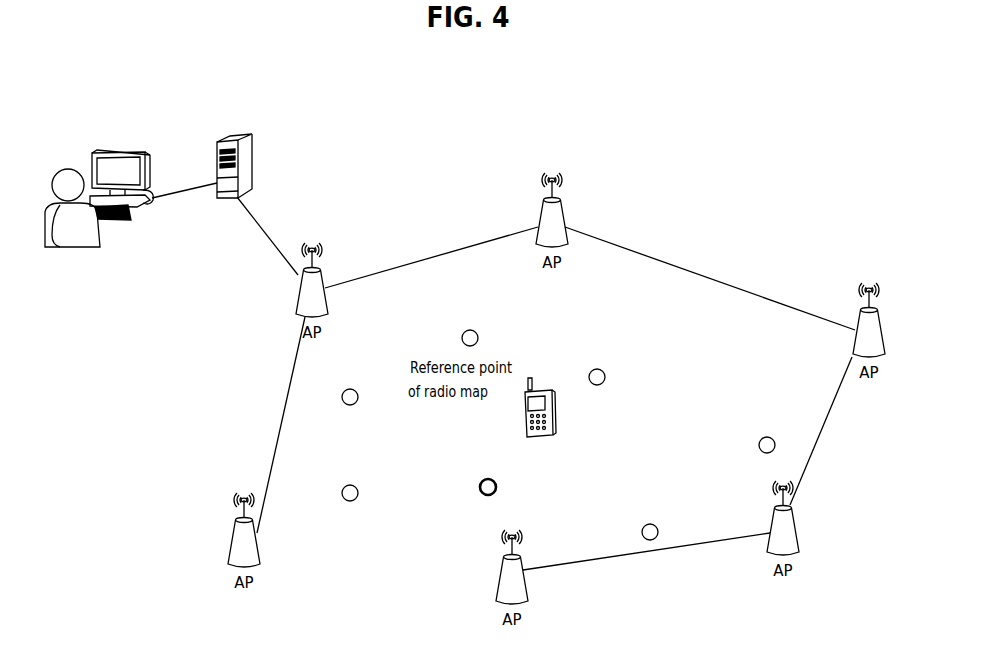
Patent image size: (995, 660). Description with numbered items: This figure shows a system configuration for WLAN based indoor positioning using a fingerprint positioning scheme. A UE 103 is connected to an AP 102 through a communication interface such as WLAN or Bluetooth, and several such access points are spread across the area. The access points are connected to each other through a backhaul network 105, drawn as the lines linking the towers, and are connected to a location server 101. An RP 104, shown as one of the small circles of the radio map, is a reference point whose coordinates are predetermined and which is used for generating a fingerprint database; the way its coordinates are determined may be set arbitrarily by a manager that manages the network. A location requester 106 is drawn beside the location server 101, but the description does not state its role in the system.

The location server 101 is at (237, 136).
The AP 102 is at (561, 174).
The UE 103 is at (546, 390).
The RP 104 is at (475, 331).
The backhaul network 105 is at (702, 274).
The location requester 106 is at (130, 152).